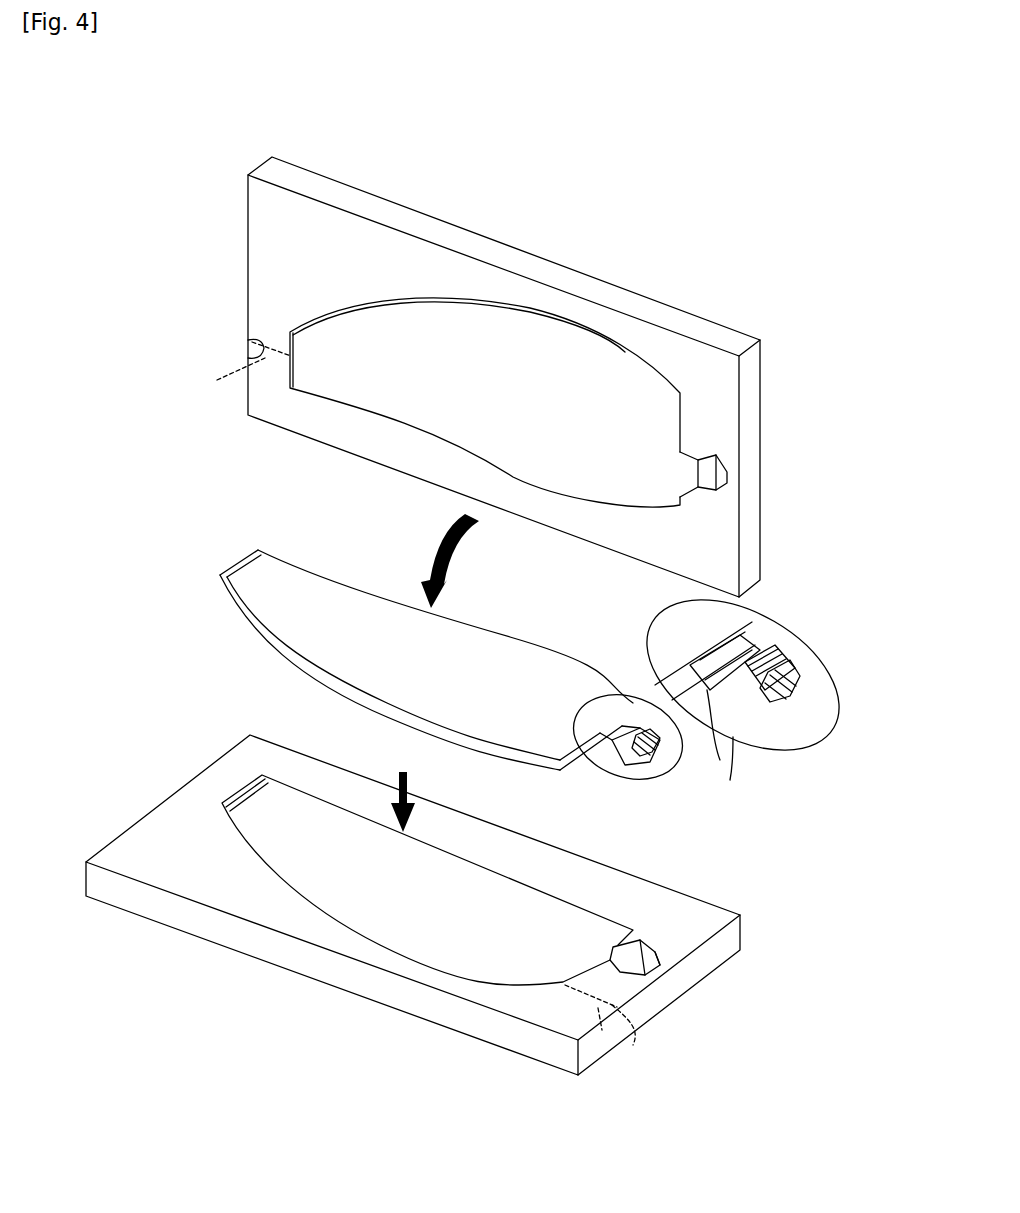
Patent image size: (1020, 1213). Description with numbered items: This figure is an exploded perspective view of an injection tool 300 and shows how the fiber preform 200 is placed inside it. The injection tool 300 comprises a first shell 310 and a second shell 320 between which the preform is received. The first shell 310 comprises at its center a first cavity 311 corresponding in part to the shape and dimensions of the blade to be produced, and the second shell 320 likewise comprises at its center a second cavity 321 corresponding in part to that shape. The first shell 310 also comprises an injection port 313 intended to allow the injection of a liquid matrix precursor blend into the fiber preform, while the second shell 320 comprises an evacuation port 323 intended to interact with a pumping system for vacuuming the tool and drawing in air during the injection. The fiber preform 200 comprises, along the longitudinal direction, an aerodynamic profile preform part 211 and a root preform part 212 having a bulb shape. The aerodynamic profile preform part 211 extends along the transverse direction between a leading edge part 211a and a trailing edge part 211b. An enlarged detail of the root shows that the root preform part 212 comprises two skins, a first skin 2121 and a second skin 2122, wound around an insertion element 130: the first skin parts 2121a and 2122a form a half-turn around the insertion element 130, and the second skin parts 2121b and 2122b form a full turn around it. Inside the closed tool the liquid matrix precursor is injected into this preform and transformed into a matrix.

The injection tool 300 is at (127, 421).
The second shell 320 is at (248, 297).
The first shell 310 is at (168, 795).
The second cavity 321 is at (550, 447).
The evacuation port 323 is at (243, 333).
The first cavity 311 is at (540, 910).
The injection port 313 is at (620, 1005).
The fiber preform 200 is at (230, 558).
The aerodynamic profile preform part 211 is at (300, 592).
The leading edge part 211a is at (522, 760).
The trailing edge part 211b is at (513, 632).
The root preform part 212 is at (615, 760).
The insertion element 130 is at (650, 748).
The first skin 2121 is at (765, 588).
The first skin part of the first skin 2121a is at (745, 657).
The second skin part of the first skin 2121b is at (750, 662).
The second skin 2122 is at (683, 800).
The first skin part of the second skin 2122a is at (730, 740).
The second skin part of the second skin 2122b is at (753, 740).